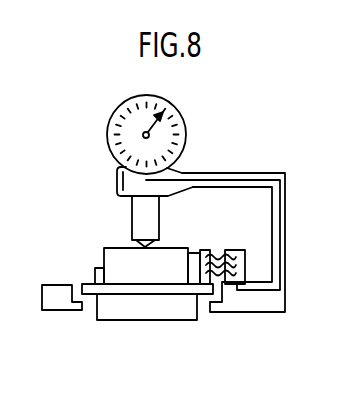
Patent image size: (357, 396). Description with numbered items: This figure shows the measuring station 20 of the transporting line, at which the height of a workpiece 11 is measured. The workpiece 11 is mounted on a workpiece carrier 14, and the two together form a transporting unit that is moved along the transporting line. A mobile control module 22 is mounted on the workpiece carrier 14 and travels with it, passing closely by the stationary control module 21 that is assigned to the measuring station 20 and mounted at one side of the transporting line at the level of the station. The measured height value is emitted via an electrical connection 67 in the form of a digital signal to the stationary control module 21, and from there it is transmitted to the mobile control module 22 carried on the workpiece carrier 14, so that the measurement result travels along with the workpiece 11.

The measuring station 20 is at (188, 129).
The electrical connection 67 is at (285, 226).
The workpiece 11 is at (111, 252).
The mobile control module 22 is at (210, 248).
The stationary control module 21 is at (245, 256).
The workpiece carrier 14 is at (118, 292).